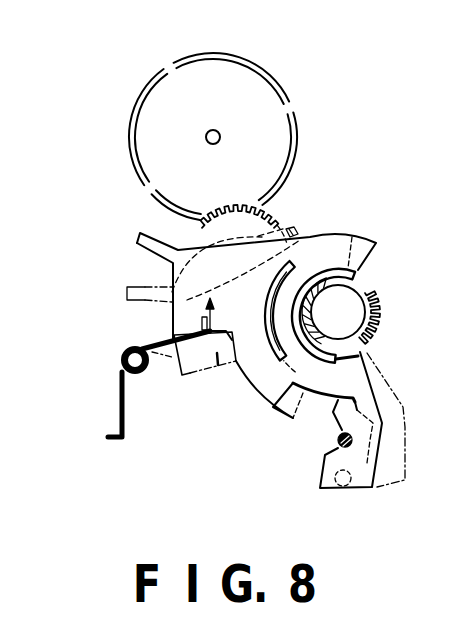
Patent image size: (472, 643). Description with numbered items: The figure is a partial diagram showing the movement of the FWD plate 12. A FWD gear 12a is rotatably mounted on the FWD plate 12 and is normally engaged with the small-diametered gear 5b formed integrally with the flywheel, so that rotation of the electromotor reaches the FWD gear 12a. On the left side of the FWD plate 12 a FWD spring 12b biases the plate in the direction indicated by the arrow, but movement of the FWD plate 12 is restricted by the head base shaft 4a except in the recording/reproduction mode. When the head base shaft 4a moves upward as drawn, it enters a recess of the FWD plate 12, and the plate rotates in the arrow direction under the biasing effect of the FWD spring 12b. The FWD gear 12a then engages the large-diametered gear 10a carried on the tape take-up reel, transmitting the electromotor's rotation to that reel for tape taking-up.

The large-diametered gear 10a is at (288, 144).
The FWD gear 12a is at (293, 230).
The FWD plate 12 is at (253, 390).
The small-diametered gear 5b is at (370, 297).
The FWD spring 12b is at (120, 378).
The head base shaft 4a is at (338, 441).